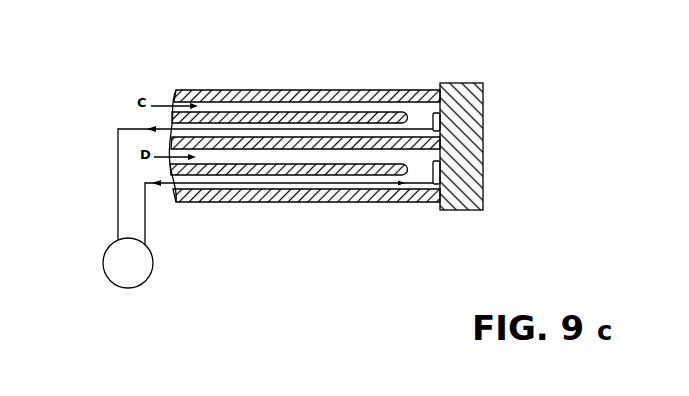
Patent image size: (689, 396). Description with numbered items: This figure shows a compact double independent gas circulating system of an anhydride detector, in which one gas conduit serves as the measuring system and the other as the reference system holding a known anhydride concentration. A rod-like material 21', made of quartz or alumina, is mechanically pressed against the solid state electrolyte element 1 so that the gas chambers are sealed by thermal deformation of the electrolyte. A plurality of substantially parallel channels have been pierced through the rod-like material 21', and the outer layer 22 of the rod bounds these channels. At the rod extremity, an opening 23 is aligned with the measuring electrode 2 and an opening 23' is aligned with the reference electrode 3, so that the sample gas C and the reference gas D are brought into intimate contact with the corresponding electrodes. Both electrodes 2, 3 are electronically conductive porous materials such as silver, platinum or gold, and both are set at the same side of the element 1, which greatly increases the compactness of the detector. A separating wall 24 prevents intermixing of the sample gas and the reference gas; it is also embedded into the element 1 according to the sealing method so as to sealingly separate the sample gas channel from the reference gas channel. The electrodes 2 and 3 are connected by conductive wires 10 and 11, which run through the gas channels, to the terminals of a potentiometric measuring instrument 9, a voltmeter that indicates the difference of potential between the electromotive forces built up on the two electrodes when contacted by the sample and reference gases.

The solid state electrolyte element 1 is at (463, 93).
The measuring electrode 2 is at (434, 112).
The reference electrode 3 is at (432, 190).
The potentiometric measuring instrument 9 is at (142, 272).
The conductive wire 10 is at (146, 225).
The conductive wire 11 is at (117, 194).
The rod-like material 21' is at (343, 145).
The outer wall layer 22 is at (348, 102).
The opening 23 is at (293, 96).
The opening 23' is at (294, 200).
The separating wall 24 is at (440, 150).